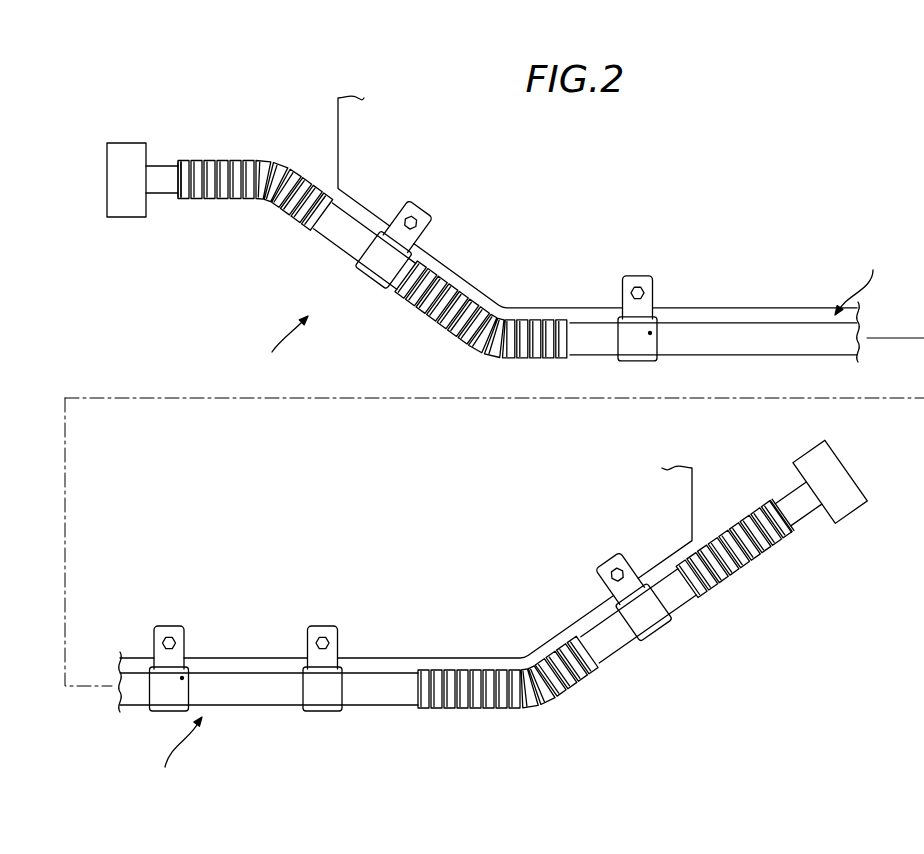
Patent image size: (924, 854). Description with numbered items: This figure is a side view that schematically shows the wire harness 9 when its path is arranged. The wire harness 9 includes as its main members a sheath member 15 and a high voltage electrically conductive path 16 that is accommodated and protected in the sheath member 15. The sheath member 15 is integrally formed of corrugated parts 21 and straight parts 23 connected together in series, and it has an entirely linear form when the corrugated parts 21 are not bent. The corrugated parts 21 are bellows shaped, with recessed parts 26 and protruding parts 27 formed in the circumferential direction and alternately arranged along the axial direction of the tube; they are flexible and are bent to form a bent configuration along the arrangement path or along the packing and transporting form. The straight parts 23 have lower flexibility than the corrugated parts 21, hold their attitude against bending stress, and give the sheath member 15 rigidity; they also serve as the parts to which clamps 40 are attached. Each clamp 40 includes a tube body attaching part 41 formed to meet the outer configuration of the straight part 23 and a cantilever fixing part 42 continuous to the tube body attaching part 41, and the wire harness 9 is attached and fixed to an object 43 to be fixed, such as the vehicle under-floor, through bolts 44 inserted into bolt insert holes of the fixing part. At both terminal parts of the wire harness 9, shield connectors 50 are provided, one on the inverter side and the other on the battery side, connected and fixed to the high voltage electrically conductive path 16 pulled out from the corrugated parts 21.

The wire harness 9 is at (282, 345).
The sheath member 15 is at (517, 518).
The high voltage electrically conductive path 16 is at (163, 166).
The corrugated part 21 is at (575, 760).
The straight part 23 is at (330, 241).
The recessed part 26 is at (180, 200).
The protruding part 27 is at (188, 200).
The clamp 40 is at (455, 482).
The tube body attaching part 41 is at (650, 333).
The cantilever fixing part 42 is at (652, 280).
The object to be fixed 43 is at (347, 170).
The bolt 44 is at (414, 210).
The shield connector 50 is at (112, 195).